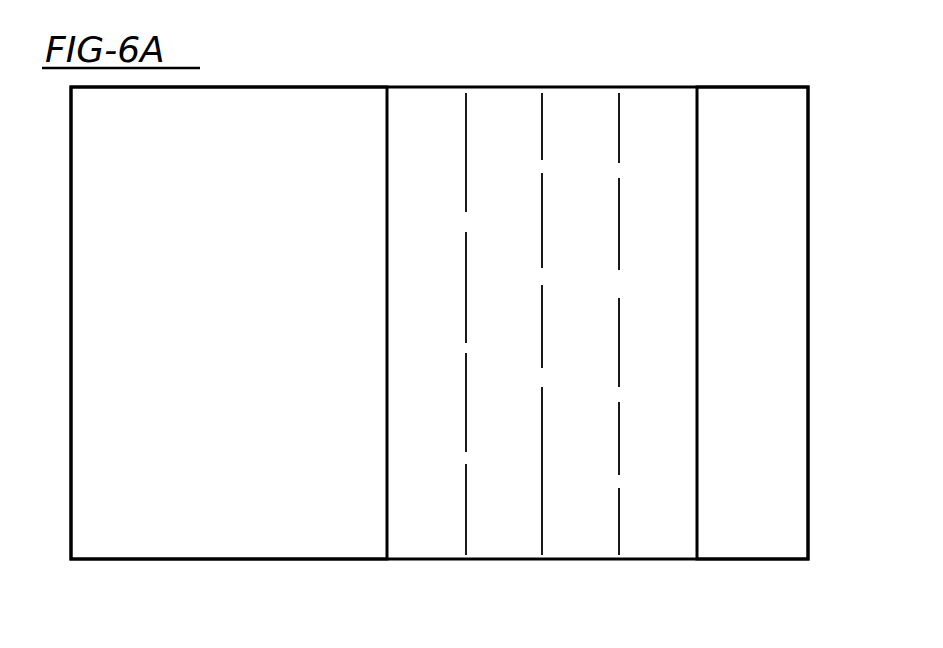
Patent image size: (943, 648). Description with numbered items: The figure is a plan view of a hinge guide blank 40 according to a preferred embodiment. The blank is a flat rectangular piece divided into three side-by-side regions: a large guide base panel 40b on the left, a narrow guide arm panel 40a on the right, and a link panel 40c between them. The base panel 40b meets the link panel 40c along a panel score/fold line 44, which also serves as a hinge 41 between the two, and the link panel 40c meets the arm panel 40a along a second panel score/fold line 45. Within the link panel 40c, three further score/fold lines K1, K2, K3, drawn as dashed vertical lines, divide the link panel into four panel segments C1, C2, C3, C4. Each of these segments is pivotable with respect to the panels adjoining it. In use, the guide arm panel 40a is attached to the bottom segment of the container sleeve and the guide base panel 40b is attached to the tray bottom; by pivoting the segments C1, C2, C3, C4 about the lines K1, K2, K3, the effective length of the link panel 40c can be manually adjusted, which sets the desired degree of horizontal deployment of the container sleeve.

The hinge guide blank 40 is at (483, 88).
The guide arm panel 40a is at (778, 400).
The guide base panel 40b is at (258, 406).
The link panel 40c is at (697, 563).
The hinge 41 is at (388, 560).
The panel score/fold line 44 is at (387, 372).
The panel score/fold line 45 is at (697, 352).
The panel segment C1 is at (668, 294).
The panel segment C2 is at (596, 294).
The panel segment C3 is at (519, 294).
The panel segment C4 is at (441, 294).
The score/fold line K1 is at (620, 471).
The score/fold line K2 is at (543, 470).
The score/fold line K3 is at (467, 474).